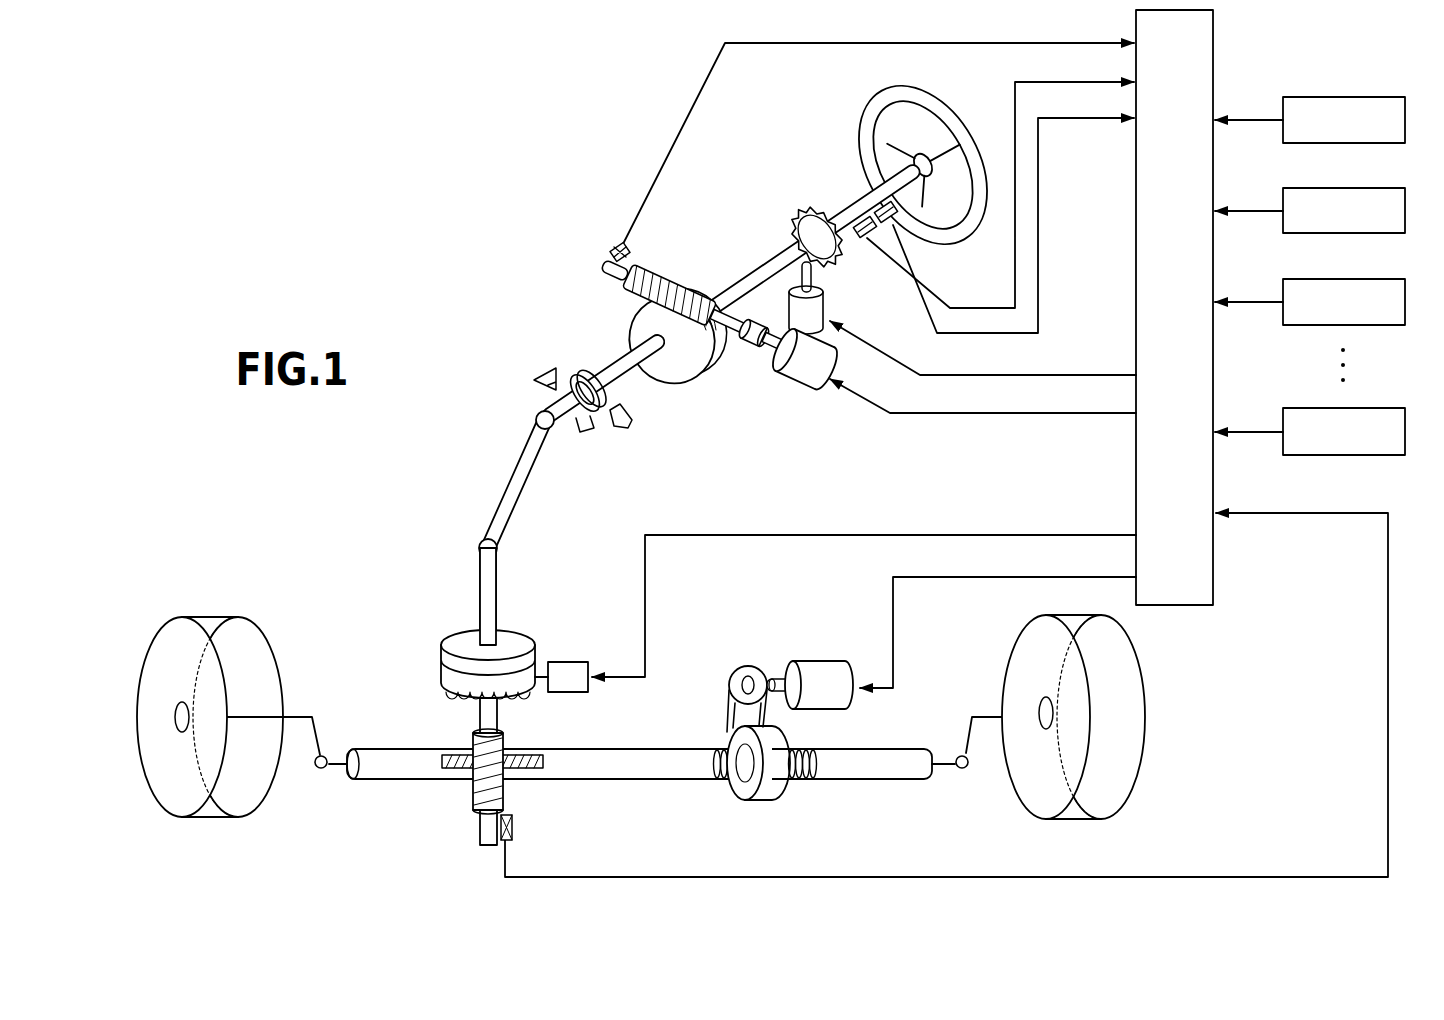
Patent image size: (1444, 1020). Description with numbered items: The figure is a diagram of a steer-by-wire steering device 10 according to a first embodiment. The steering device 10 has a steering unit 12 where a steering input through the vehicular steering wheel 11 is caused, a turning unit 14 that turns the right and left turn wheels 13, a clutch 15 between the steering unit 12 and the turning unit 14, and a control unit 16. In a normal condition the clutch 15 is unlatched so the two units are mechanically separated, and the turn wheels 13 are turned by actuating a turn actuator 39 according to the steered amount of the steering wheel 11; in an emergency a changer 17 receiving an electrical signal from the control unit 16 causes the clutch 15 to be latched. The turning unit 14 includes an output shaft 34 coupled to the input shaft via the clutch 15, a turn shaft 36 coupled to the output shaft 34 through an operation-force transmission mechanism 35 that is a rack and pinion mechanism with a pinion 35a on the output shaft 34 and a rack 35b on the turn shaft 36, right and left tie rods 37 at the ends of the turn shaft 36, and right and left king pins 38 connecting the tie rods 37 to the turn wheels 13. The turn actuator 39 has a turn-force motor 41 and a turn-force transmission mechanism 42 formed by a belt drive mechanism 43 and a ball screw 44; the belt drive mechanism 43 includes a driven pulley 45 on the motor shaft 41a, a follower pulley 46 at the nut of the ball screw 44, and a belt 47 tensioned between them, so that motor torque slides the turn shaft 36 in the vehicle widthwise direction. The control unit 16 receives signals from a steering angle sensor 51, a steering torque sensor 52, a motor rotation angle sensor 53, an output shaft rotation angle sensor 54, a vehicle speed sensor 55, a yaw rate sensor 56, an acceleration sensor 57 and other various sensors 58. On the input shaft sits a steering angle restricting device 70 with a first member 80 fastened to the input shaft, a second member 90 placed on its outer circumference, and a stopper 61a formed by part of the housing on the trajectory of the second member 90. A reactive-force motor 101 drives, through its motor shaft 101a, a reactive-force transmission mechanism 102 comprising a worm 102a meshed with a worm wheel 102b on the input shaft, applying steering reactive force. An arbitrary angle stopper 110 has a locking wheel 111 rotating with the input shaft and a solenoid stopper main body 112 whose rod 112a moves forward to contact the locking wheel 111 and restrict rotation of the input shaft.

The steer-by-wire steering device 10 is at (344, 152).
The steering wheel 11 is at (958, 128).
The steering unit 12 is at (931, 92).
The turn wheels 13 is at (176, 800).
The turning unit 14 is at (805, 816).
The clutch 15 is at (505, 632).
The control unit 16 is at (1196, 38).
The changer 17 is at (567, 662).
The output shaft 34 is at (482, 724).
The operation-force transmission mechanism 35 is at (363, 805).
The pinion 35a is at (480, 810).
The rack 35b is at (440, 765).
The turn shaft 36 is at (620, 781).
The tie rods 37 is at (325, 770).
The king pins 38 is at (304, 716).
The turn actuator 39 is at (780, 591).
The turn-force motor 41 is at (827, 672).
The motor shaft 41a is at (785, 680).
The turn-force transmission mechanism 42 is at (801, 722).
The belt drive mechanism 43 is at (690, 628).
The ball screw 44 is at (730, 776).
The driven pulley 45 is at (736, 678).
The follower pulley 46 is at (740, 742).
The belt 47 is at (740, 712).
The steering angle sensor 51 is at (880, 204).
The steering torque sensor 52 is at (858, 220).
The motor rotation angle sensor 53 is at (611, 246).
The output shaft rotation angle sensor 54 is at (514, 832).
The vehicle speed sensor 55 is at (1355, 115).
The yaw rate sensor 56 is at (1355, 208).
The acceleration sensor 57 is at (1355, 300).
The other various sensors 58 is at (1355, 428).
The stopper 61a is at (535, 388).
The steering angle restricting device 70 is at (547, 347).
The first member 80 is at (580, 371).
The second member 90 is at (585, 430).
The reactive-force motor 101 is at (828, 398).
The motor shaft 101a is at (789, 388).
The reactive-force transmission mechanism 102 is at (652, 440).
The worm 102a is at (735, 312).
The worm wheel 102b is at (689, 366).
The arbitrary angle stopper 110 is at (769, 178).
The locking wheel 111 is at (793, 224).
The stopper main body 112 is at (826, 310).
The rod 112a is at (800, 274).